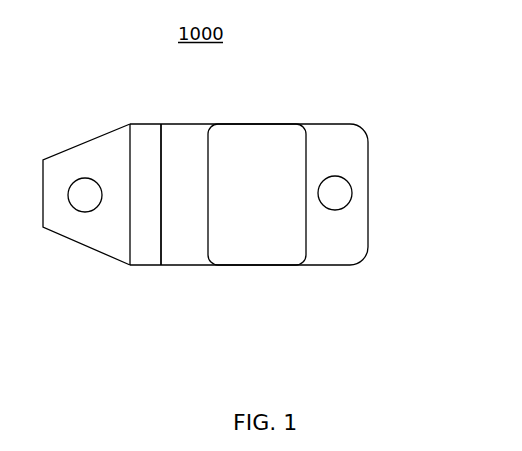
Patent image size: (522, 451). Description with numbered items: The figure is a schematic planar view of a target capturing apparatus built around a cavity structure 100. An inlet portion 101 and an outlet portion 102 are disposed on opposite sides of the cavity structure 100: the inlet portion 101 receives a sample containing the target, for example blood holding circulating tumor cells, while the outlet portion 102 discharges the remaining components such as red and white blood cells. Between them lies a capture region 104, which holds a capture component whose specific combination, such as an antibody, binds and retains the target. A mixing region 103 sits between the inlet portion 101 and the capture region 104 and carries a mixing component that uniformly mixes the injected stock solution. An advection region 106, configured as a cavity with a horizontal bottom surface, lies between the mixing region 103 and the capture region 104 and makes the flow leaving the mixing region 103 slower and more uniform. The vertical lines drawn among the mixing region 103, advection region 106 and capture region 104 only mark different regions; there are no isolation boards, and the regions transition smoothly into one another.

The cavity structure 100 is at (278, 123).
The inlet portion 101 is at (67, 213).
The outlet portion 102 is at (348, 203).
The mixing region 103 is at (143, 256).
The capture region 104 is at (242, 259).
The advection region 106 is at (183, 268).